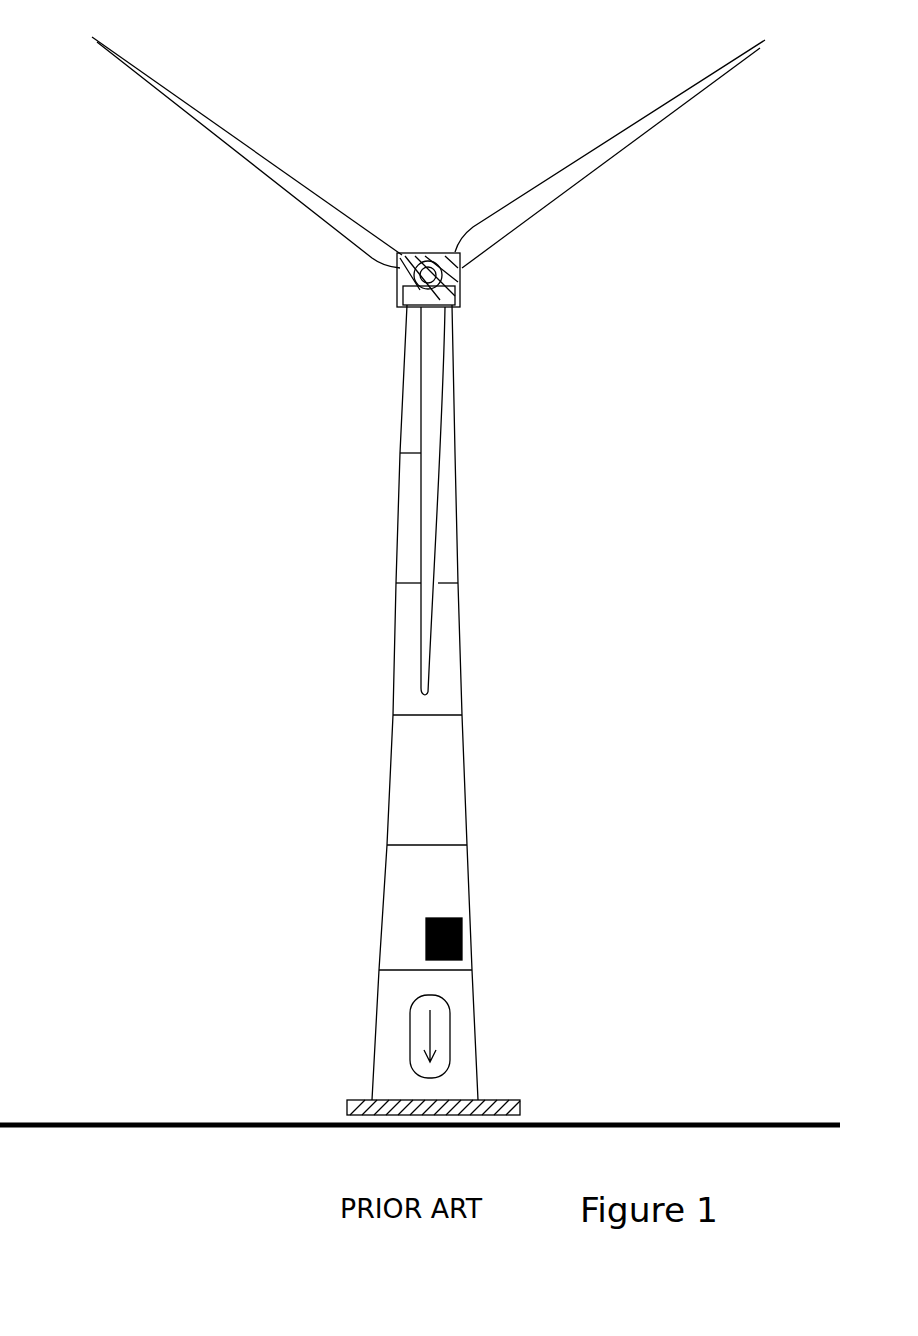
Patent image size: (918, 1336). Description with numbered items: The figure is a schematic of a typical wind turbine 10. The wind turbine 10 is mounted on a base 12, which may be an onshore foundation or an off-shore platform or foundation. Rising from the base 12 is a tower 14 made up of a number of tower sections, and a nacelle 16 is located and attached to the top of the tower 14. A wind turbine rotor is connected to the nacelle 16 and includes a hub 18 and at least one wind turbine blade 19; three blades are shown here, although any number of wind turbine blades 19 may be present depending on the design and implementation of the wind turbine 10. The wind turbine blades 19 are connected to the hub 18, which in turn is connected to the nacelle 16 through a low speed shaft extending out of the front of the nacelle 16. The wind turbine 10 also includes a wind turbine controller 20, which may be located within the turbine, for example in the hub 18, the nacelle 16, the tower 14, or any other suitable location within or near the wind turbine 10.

The wind turbine 10 is at (186, 604).
The base 12 is at (357, 1103).
The tower 14 is at (457, 803).
The nacelle 16 is at (453, 292).
The hub 18 is at (432, 282).
The wind turbine blade 19 is at (627, 137).
The wind turbine controller 20 is at (462, 940).